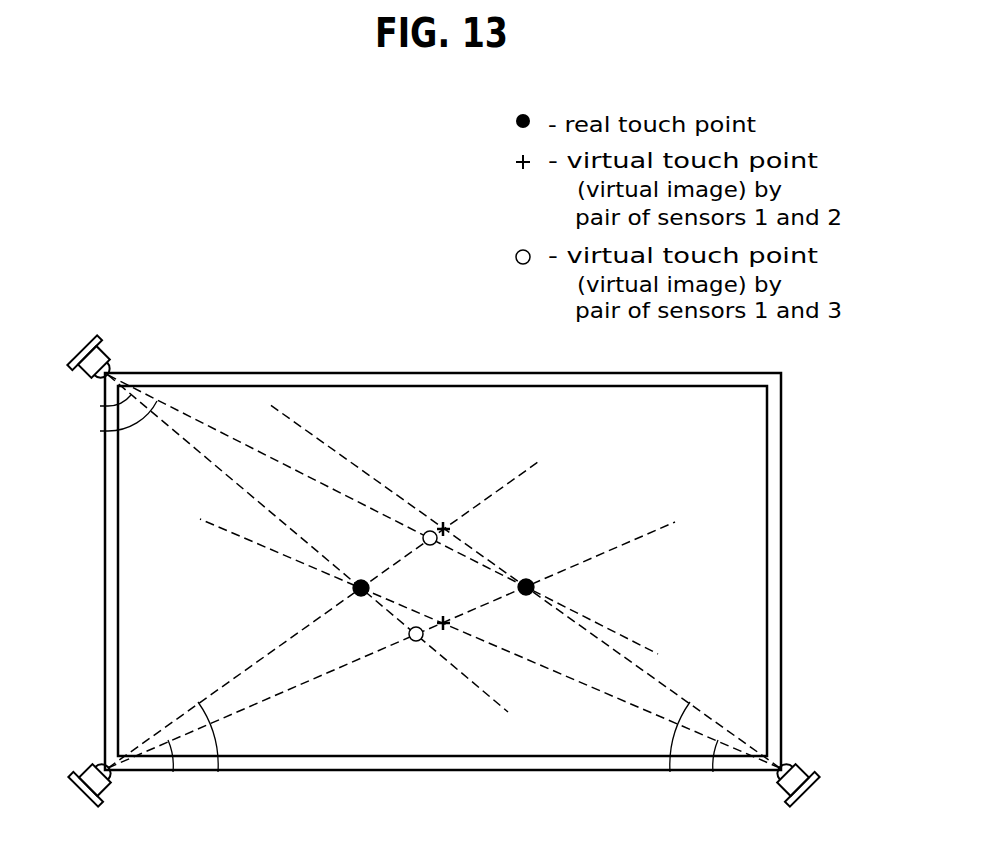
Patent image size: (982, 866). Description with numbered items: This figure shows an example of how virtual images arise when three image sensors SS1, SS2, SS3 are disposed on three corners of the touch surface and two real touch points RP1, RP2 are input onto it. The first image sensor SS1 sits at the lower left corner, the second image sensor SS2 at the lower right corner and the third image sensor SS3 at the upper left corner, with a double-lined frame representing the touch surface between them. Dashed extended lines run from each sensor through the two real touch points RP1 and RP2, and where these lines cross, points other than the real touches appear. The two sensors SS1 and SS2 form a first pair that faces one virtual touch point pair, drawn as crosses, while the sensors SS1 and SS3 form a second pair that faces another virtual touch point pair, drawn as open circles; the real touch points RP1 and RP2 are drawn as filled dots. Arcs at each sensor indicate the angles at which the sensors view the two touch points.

The first image sensor SS1 is at (84, 782).
The second image sensor SS2 is at (804, 785).
The third image sensor SS3 is at (81, 362).
The first real touch point RP1 is at (363, 577).
The second real touch point RP2 is at (527, 576).